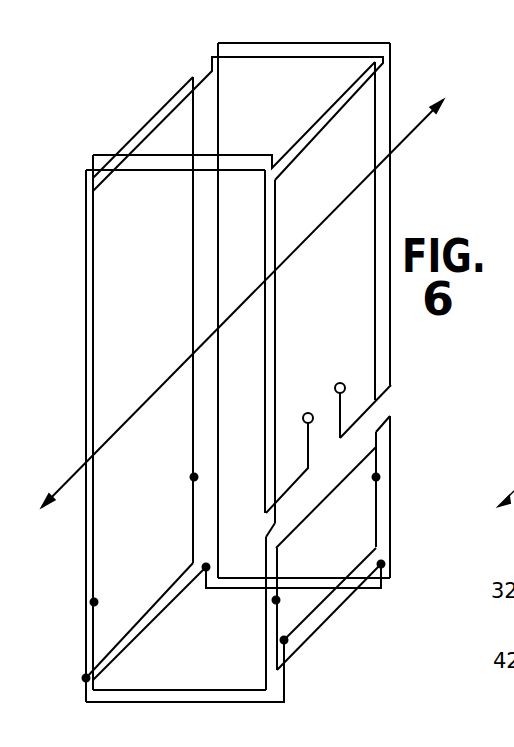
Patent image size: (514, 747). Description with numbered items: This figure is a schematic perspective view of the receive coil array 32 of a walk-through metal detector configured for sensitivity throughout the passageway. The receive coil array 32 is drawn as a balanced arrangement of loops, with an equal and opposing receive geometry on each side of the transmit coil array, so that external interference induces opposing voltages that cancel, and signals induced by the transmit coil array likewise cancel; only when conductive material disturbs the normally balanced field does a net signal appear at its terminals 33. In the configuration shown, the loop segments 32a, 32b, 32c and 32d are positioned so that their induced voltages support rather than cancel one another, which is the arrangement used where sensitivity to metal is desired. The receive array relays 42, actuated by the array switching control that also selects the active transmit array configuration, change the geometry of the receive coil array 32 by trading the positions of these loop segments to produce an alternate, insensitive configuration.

The receive coil array 32 is at (424, 72).
The loop segment 32a is at (97, 627).
The loop segment 32b is at (192, 543).
The loop segment 32c is at (278, 623).
The loop segment 32d is at (377, 513).
The terminals 33 is at (336, 384).
The receive array relays 42 is at (192, 477).